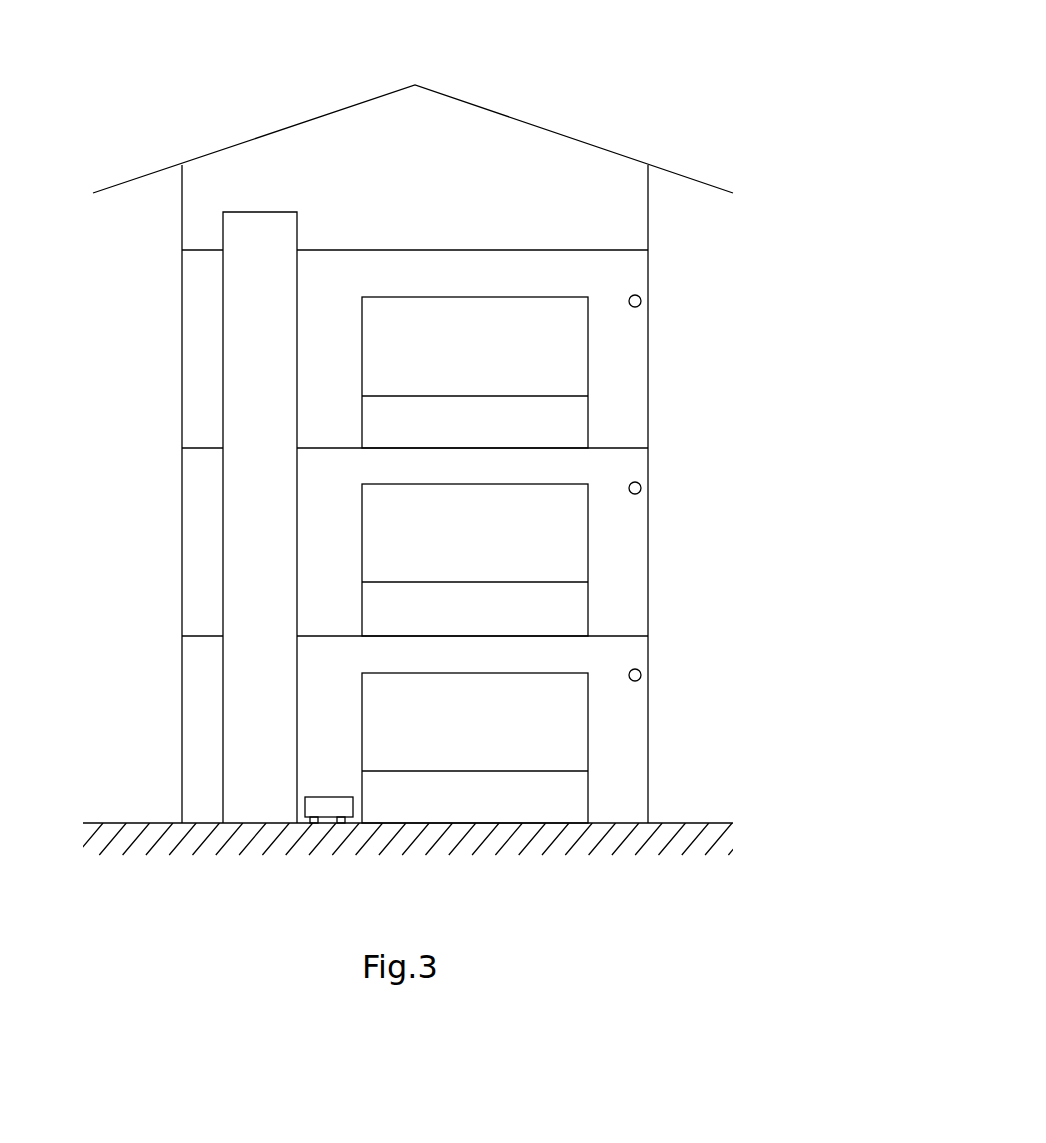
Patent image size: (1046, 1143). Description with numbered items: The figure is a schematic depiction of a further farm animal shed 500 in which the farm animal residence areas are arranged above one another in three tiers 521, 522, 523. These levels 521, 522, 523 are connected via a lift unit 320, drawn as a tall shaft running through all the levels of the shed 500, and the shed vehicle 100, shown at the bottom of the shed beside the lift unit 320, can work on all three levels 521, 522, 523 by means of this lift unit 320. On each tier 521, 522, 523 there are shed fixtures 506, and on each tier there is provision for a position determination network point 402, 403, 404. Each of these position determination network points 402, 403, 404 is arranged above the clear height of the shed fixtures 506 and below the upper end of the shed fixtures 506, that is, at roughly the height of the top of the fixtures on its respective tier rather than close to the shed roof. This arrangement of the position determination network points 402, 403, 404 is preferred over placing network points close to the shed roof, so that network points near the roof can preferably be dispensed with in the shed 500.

The farm animal shed 500 is at (616, 83).
The lift unit 320 is at (224, 547).
The third tier 523 is at (158, 349).
The second tier 522 is at (158, 484).
The first tier 521 is at (158, 709).
The shed fixtures 506 is at (588, 352).
The position determination network point 404 is at (641, 300).
The position determination network point 403 is at (641, 487).
The position determination network point 402 is at (641, 674).
The shed vehicle 100 is at (320, 833).